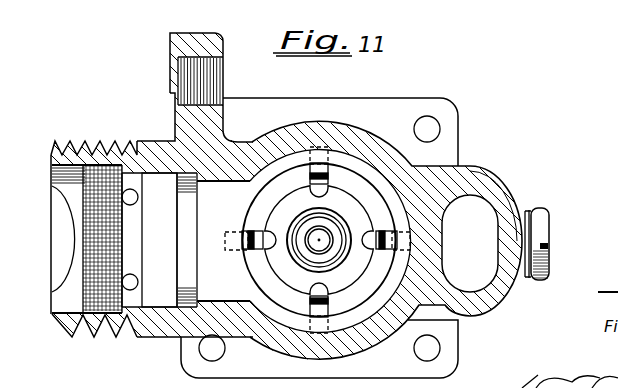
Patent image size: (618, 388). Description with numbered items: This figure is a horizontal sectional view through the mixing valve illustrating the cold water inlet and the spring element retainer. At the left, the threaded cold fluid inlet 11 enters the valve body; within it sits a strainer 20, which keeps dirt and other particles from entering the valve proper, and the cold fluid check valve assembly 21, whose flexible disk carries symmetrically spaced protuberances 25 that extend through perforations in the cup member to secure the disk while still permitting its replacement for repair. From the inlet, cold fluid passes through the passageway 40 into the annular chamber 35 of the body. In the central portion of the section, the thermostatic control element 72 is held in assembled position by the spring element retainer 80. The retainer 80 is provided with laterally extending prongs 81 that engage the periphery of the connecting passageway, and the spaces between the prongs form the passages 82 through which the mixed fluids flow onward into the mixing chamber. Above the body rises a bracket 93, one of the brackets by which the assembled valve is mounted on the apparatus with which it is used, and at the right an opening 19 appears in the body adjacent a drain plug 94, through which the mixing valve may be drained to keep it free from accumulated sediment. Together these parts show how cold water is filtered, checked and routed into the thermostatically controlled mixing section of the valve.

The cold fluid inlet 11 is at (66, 314).
The outlet opening 19 is at (497, 242).
The strainer 20 is at (91, 313).
The cold fluid check valve assembly 21 is at (171, 238).
The protuberances 25 is at (137, 152).
The chamber 35 is at (361, 152).
The passageway 40 is at (197, 188).
The thermostatic control element 72 is at (337, 254).
The spring element retainer 80 is at (290, 202).
The prongs 81 is at (330, 177).
The passages 82 is at (282, 203).
The bracket 93 is at (218, 37).
The drain plug 94 is at (549, 266).